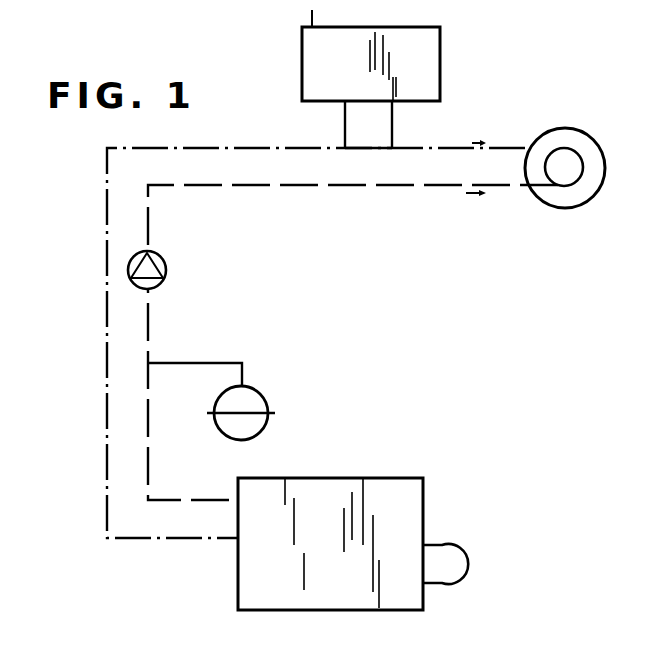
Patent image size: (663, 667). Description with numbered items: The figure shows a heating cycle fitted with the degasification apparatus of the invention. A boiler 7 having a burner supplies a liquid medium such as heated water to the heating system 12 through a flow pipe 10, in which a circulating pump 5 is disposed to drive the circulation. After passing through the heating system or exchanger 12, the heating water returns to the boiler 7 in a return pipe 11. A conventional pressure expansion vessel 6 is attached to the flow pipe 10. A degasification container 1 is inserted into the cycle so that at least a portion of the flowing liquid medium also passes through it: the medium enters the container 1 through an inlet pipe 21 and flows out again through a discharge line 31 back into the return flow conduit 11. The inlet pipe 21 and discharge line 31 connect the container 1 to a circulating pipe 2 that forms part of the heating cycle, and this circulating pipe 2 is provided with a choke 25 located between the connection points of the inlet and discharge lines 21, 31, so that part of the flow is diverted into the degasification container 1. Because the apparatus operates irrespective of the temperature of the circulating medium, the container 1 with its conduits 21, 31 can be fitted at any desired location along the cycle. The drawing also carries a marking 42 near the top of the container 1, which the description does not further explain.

The degasification container 1 is at (437, 36).
The circulating pipe 2 is at (535, 9).
The circulating pump 5 is at (166, 265).
The pressure expansion vessel 6 is at (254, 398).
The boiler 7 is at (411, 485).
The flow pipe 10 is at (186, 494).
The return pipe 11 is at (163, 540).
The heating system 12 is at (578, 124).
The inlet pipe 21 is at (393, 124).
The choke 25 is at (364, 145).
The discharge line 31 is at (346, 124).
The tick mark 42 is at (314, 17).